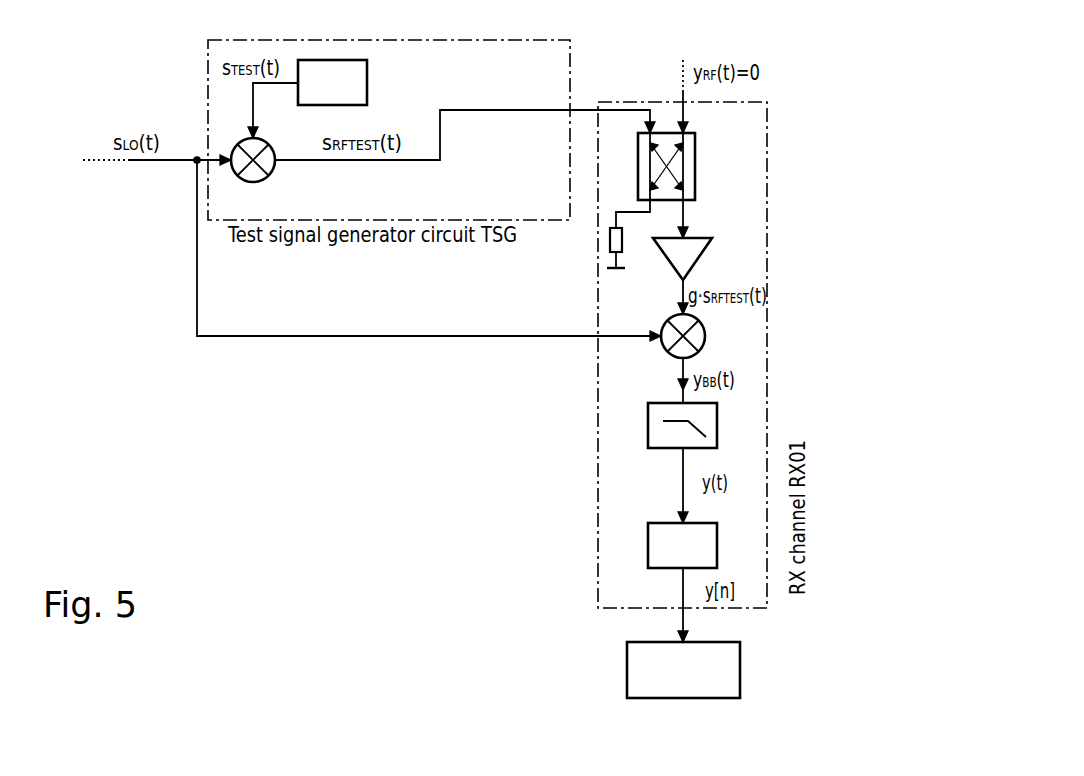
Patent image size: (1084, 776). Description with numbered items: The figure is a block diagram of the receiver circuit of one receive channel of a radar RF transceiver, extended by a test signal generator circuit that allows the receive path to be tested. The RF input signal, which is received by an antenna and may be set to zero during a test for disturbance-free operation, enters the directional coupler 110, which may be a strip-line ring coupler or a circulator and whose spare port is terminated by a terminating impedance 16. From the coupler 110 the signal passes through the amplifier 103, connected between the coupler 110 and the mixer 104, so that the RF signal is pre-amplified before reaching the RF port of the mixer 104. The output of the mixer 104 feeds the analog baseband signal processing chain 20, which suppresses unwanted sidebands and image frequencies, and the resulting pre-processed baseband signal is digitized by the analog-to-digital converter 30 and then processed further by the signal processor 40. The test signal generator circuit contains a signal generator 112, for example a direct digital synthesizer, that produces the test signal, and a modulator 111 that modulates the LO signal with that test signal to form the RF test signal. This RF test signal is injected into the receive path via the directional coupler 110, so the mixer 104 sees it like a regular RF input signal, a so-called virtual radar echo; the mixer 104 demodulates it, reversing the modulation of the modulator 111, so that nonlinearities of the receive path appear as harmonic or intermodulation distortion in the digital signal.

The signal generator 112 is at (367, 78).
The modulator 111 is at (268, 178).
The directional coupler 110 is at (695, 153).
The terminating impedance 16 is at (610, 247).
The amplifier 103 is at (708, 244).
The mixer 104 is at (705, 336).
The analog baseband signal processing chain 20 is at (648, 425).
The analog-to-digital converter 30 is at (648, 548).
The signal processor 40 is at (740, 671).